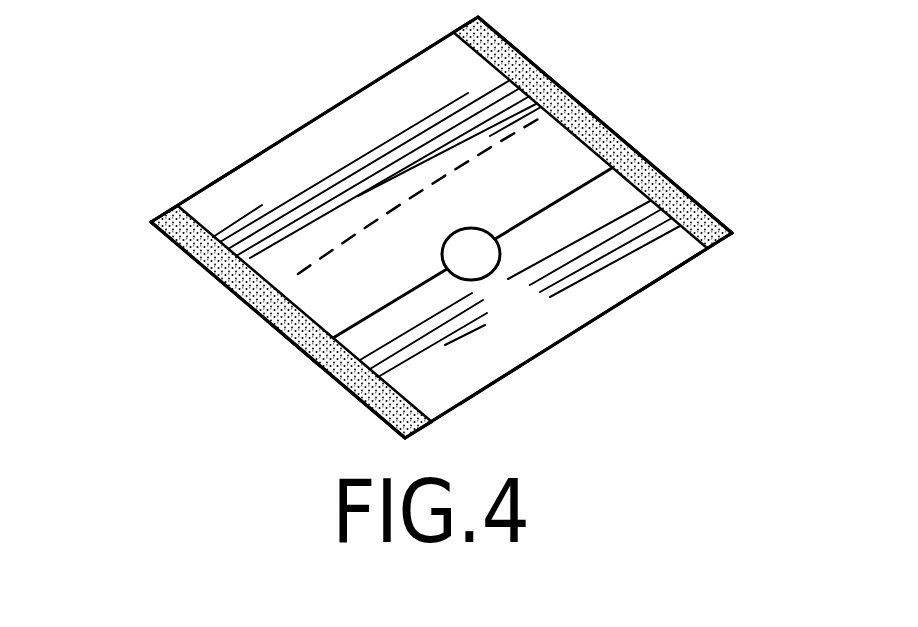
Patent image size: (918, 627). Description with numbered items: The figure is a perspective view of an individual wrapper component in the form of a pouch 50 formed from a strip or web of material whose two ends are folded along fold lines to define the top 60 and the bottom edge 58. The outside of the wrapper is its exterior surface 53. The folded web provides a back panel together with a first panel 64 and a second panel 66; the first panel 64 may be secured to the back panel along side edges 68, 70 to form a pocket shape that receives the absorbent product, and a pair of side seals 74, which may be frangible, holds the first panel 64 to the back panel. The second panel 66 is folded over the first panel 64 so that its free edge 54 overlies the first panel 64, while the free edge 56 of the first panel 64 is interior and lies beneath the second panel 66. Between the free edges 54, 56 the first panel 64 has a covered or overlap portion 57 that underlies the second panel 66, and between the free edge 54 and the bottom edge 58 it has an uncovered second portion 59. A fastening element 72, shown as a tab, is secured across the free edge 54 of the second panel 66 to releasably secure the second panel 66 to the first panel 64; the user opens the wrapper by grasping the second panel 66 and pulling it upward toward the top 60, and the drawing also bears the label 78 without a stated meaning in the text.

The pouch 50 is at (300, 173).
The exterior surface 53 is at (490, 363).
The free edge of second panel 54 is at (577, 191).
The free edge of first panel 56 is at (520, 128).
The covered or overlap portion 57 is at (322, 302).
The bottom edge 58 is at (603, 316).
The uncovered second portion 59 is at (663, 258).
The top 60 is at (356, 92).
The first panel 64 is at (532, 312).
The second panel 66 is at (386, 148).
The side edge 68 is at (547, 75).
The side edge 70 is at (198, 274).
The fastening element 72 is at (462, 250).
The side seals 74 is at (343, 384).
The corner region 78 is at (228, 222).